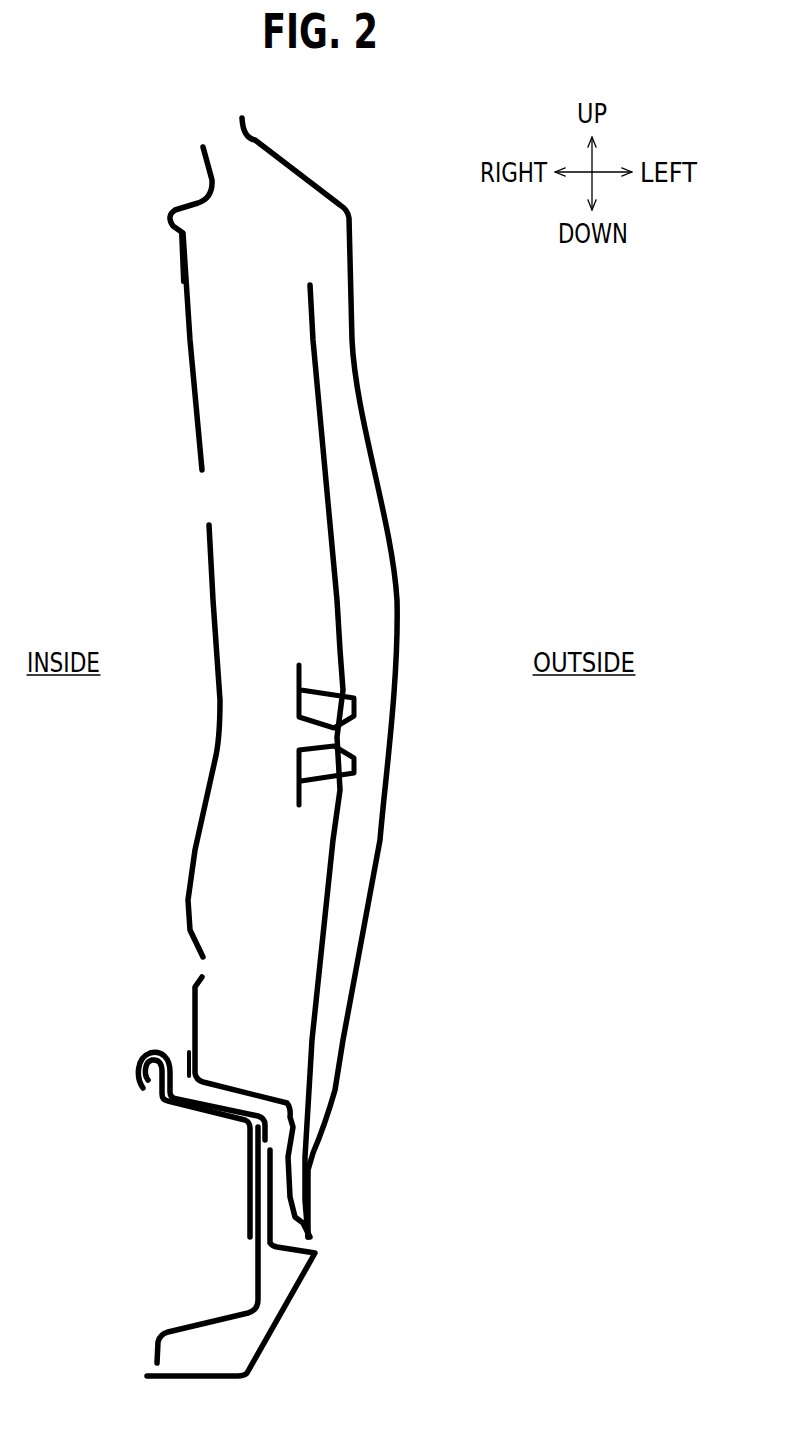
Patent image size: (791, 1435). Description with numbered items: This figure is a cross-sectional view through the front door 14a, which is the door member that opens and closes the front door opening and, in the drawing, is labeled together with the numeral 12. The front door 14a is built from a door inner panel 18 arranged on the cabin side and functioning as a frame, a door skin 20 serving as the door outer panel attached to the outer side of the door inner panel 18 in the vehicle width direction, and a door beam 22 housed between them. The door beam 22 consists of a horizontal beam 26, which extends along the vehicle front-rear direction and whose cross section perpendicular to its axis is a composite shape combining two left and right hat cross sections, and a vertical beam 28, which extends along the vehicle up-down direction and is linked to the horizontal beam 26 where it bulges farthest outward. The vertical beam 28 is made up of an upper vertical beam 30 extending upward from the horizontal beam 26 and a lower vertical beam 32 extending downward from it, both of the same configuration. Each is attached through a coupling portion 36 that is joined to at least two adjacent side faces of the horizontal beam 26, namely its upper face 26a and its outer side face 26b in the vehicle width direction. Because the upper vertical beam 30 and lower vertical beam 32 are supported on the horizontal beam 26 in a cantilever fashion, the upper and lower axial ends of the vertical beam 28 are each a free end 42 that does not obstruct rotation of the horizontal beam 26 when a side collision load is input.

The vehicle body side panel 12 is at (362, 668).
The front door 14a is at (362, 668).
The door inner panel 18 is at (210, 620).
The door skin 20 is at (400, 517).
The door beam 22 is at (358, 737).
The horizontal beam 26 is at (318, 717).
The upper face 26a is at (368, 717).
The outer side face 26b is at (381, 730).
The vertical beam 28 is at (333, 728).
The upper vertical beam 30 is at (320, 487).
The lower vertical beam 32 is at (307, 728).
The coupling portion 36 is at (378, 730).
The free end 42 is at (307, 728).